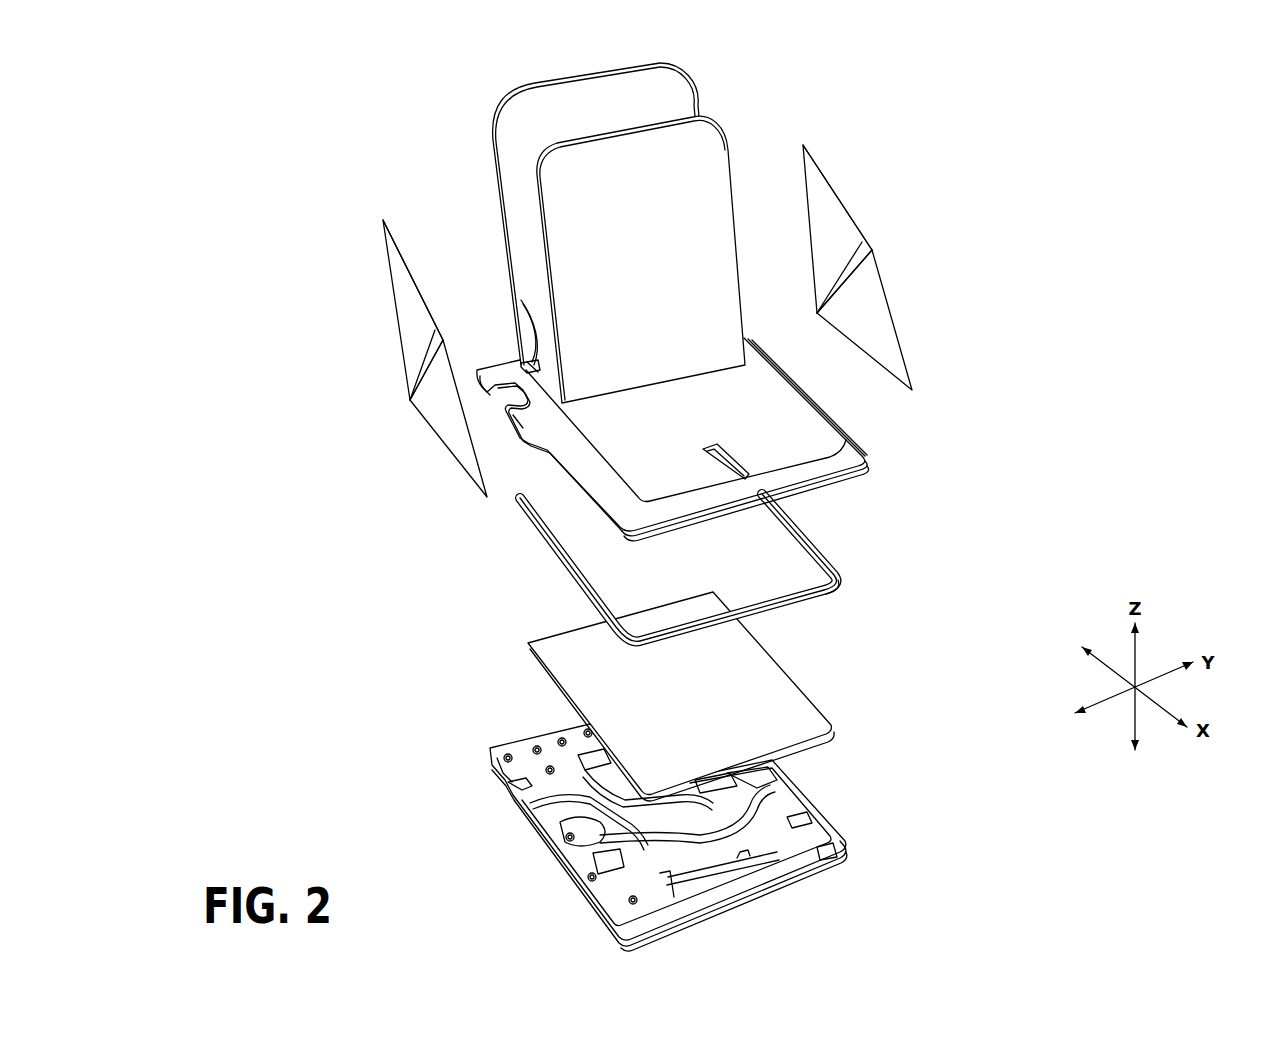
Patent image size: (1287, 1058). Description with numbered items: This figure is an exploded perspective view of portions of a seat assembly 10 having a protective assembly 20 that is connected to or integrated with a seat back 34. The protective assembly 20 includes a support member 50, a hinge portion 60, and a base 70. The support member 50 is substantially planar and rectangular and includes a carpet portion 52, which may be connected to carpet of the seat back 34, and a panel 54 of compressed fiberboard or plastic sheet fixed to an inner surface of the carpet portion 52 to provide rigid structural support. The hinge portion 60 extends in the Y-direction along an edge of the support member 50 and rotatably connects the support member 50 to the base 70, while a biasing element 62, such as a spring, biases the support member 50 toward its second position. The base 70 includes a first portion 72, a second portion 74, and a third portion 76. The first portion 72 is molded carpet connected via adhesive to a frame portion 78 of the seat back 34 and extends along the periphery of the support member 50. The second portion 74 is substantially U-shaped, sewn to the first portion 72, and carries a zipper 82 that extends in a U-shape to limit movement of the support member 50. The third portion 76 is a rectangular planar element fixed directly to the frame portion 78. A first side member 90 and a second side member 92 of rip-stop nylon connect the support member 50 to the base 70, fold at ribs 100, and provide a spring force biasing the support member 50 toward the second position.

The seat assembly 10 is at (255, 129).
The protective assembly 20 is at (879, 104).
The seat back 34 is at (848, 875).
The support member 50 is at (455, 145).
The carpet portion 52 is at (668, 62).
The panel 54 is at (723, 143).
The hinge portion 60 is at (513, 350).
The biasing element 62 is at (519, 299).
The base 70 is at (415, 668).
The first portion 72 is at (872, 460).
The second portion 74 is at (845, 592).
The third portion 76 is at (832, 727).
The frame portion 78 is at (840, 830).
The zipper 82 is at (836, 580).
The first side member 90 is at (390, 325).
The second side member 92 is at (896, 238).
The rib 100 is at (440, 338).